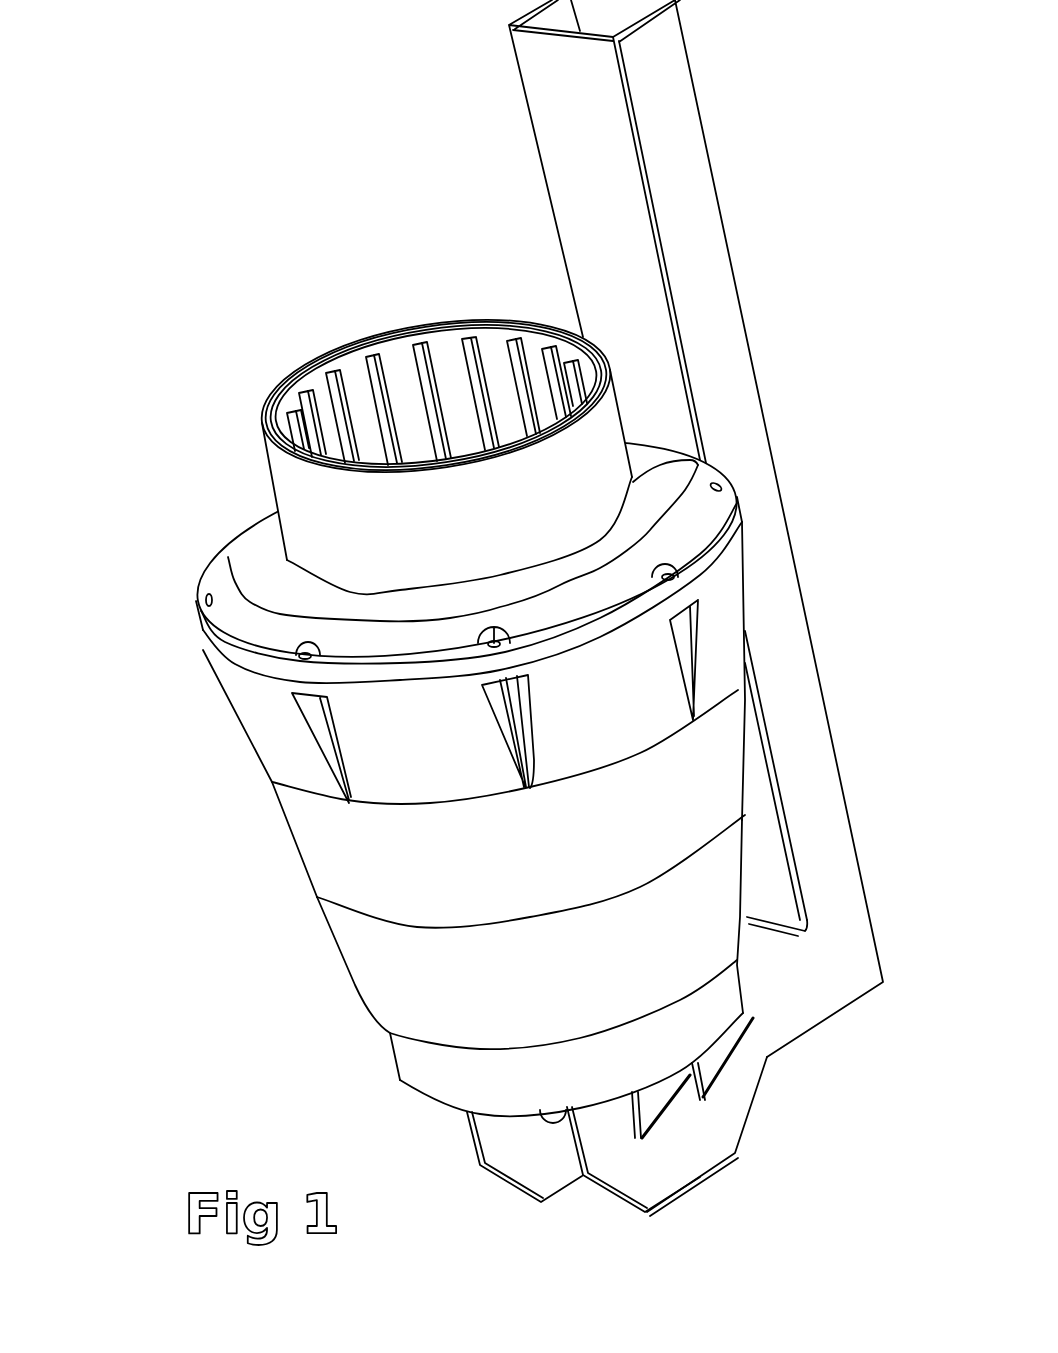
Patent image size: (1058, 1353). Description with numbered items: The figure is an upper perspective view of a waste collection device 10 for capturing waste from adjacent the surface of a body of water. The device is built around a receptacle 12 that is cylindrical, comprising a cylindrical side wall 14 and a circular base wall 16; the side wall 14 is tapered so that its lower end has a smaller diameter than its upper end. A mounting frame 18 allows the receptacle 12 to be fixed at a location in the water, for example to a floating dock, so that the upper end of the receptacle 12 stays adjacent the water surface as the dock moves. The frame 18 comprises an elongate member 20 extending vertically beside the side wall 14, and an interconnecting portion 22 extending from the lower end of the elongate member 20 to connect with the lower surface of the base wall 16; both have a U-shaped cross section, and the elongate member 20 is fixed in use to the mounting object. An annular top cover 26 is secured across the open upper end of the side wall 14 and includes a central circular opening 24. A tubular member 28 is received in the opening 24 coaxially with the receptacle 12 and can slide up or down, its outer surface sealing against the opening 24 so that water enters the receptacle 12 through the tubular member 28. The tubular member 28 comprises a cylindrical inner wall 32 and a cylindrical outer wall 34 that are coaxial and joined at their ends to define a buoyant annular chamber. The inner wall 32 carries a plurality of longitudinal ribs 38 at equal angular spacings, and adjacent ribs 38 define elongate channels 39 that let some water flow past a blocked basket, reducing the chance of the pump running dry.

The waste collection device 10 is at (161, 278).
The receptacle 12 is at (310, 828).
The cylindrical side wall 14 is at (388, 965).
The circular base wall 16 is at (433, 1117).
The mounting frame 18 is at (840, 648).
The elongate member 20 is at (745, 408).
The interconnecting portion 22 is at (762, 1033).
The opening 24 is at (287, 560).
The top cover 26 is at (250, 577).
The tubular member 28 is at (312, 367).
The cylindrical inner wall 32 is at (447, 383).
The cylindrical outer wall 34 is at (649, 522).
The ribs 38 is at (502, 377).
The elongate channels 39 is at (473, 370).